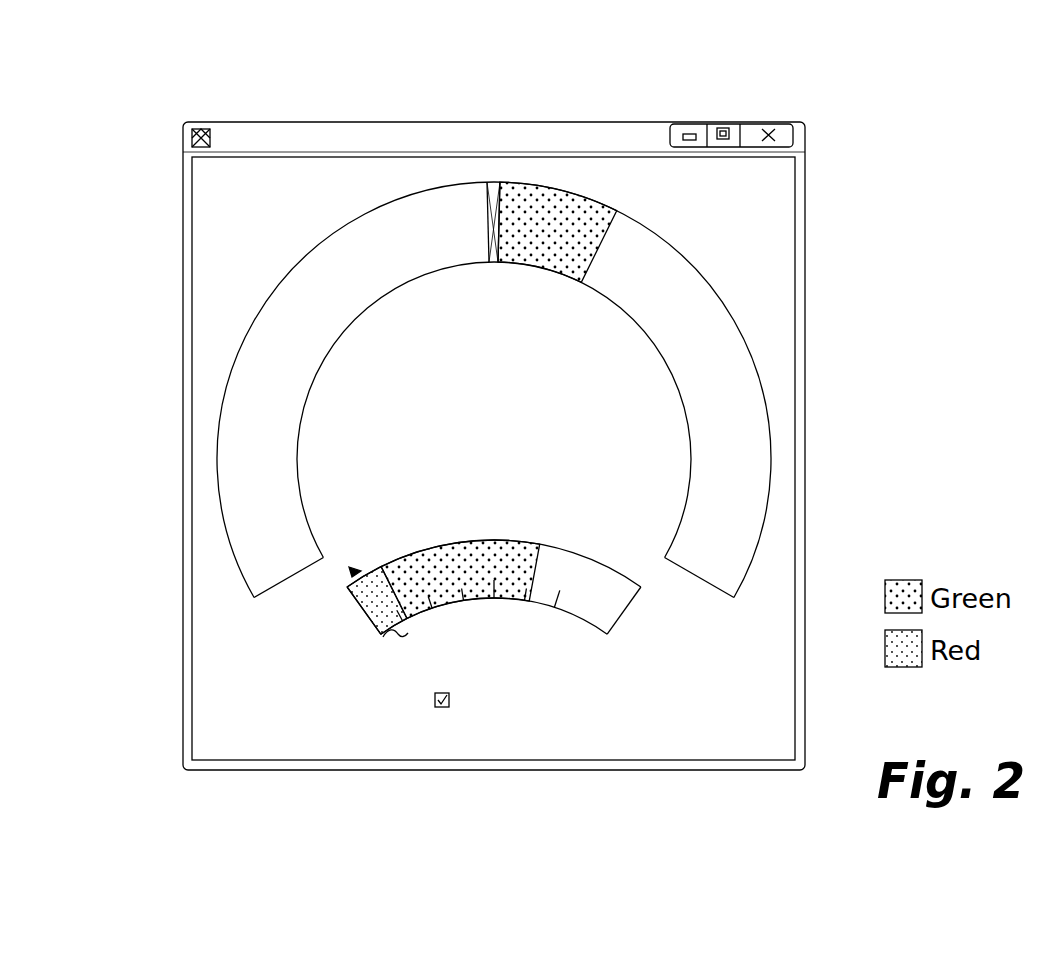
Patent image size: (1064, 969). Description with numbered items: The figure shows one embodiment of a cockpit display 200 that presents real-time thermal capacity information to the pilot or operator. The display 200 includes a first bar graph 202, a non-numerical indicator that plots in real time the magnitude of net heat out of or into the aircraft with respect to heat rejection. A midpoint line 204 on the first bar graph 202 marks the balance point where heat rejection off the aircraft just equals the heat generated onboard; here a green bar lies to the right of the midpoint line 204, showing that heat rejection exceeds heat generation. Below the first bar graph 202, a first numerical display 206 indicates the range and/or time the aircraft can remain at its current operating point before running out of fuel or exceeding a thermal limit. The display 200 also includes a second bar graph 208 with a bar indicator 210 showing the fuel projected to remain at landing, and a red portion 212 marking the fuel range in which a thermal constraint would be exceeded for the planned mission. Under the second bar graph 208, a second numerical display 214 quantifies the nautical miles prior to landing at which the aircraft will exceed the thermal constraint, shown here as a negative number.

The display 200 is at (849, 105).
The first bar graph 202 is at (470, 229).
The midpoint line 204 is at (492, 181).
The first numerical display 206 is at (604, 389).
The second bar graph 208 is at (614, 558).
The bar indicator 210 is at (344, 563).
The red portion 212 is at (400, 640).
The second numerical display 214 is at (544, 644).